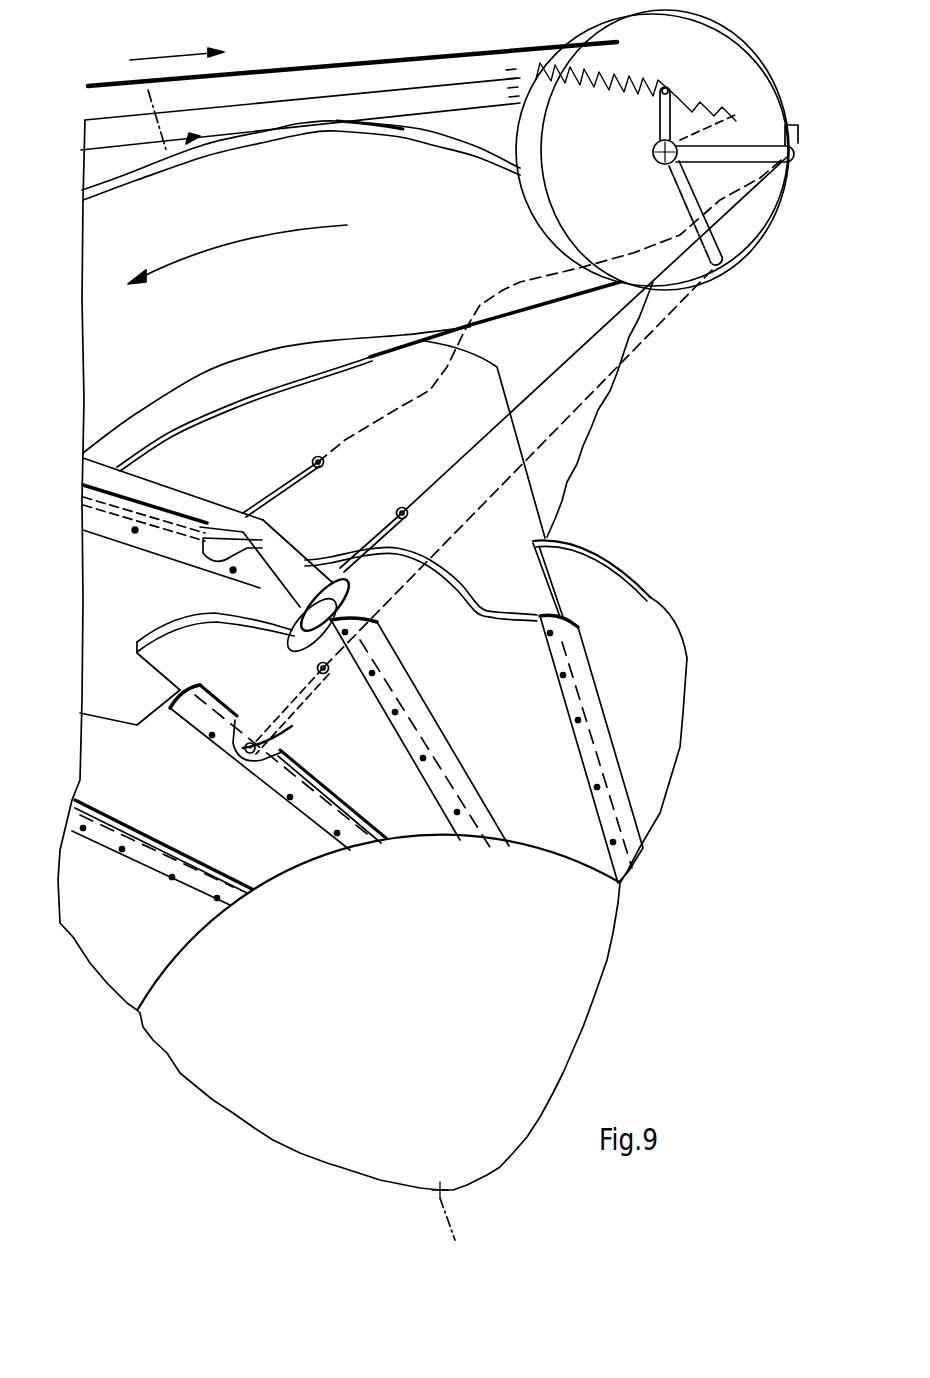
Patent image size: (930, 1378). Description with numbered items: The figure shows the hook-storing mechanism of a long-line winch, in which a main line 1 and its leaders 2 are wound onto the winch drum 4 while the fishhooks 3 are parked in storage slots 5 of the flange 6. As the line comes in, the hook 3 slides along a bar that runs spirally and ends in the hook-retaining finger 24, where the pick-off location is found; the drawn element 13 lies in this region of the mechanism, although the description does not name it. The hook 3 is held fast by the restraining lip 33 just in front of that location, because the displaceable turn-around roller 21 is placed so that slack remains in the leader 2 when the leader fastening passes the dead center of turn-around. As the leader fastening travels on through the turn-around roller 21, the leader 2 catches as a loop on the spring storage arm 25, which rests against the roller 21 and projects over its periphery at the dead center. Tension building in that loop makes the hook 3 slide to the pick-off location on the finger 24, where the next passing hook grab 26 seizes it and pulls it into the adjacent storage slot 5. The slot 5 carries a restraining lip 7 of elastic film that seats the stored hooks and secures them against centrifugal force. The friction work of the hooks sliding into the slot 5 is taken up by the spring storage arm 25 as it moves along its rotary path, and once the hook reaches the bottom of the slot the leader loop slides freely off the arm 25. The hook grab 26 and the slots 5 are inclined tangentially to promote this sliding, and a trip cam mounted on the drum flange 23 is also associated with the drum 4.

The main line 1 is at (447, 52).
The leader 2 is at (593, 340).
The fishhook 3 is at (277, 557).
The winch drum 4 is at (92, 568).
The storage slot 5 is at (568, 611).
The flange 6 is at (138, 978).
The restraining lip 7 is at (580, 657).
The belt end housing 13 is at (238, 560).
The turn-around roller 21 is at (520, 63).
The drum flange 23 is at (410, 153).
The hook-retaining finger 24 is at (183, 690).
The spring storage arm 25 is at (575, 118).
The hook grab 26 is at (563, 563).
The restraining lip 33 is at (163, 547).